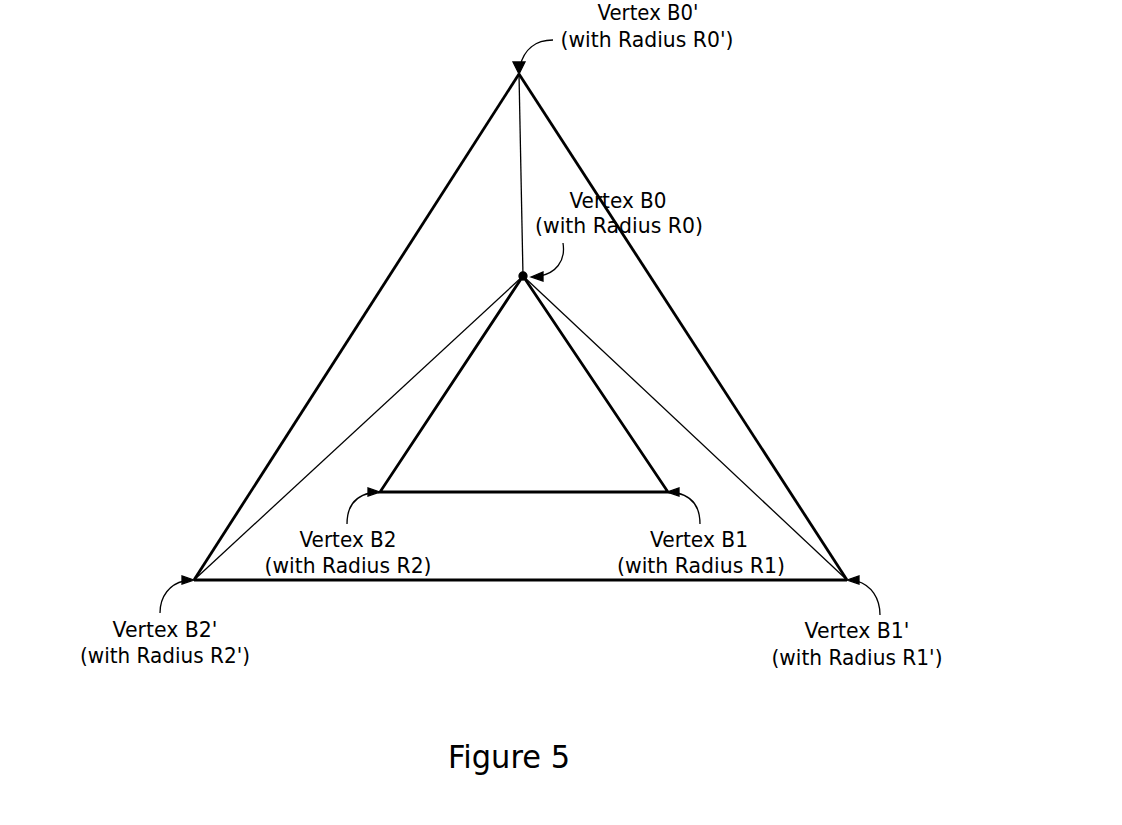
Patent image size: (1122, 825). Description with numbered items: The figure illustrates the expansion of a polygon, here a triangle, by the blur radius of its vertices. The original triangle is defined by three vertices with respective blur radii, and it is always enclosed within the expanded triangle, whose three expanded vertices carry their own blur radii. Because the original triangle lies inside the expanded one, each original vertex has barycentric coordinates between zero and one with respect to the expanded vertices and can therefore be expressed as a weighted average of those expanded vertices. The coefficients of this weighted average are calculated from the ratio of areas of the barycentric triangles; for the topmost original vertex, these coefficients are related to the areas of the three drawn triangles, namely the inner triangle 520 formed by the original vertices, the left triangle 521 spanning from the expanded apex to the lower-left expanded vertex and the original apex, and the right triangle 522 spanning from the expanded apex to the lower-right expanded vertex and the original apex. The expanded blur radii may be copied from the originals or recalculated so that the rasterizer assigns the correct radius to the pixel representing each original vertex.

The triangle 520 is at (507, 556).
The triangle 521 is at (440, 299).
The triangle 522 is at (648, 347).